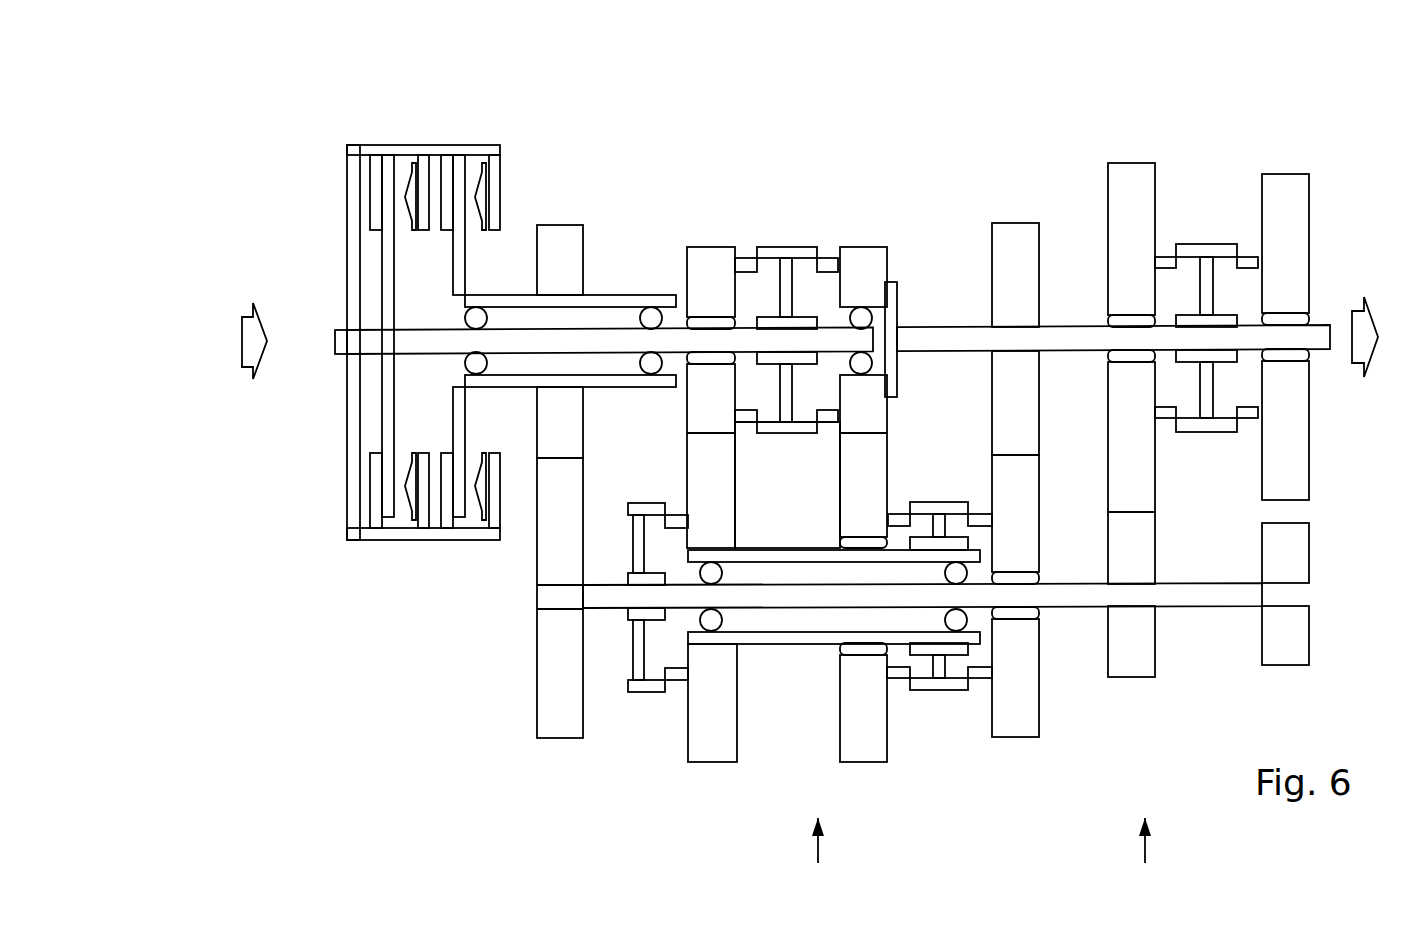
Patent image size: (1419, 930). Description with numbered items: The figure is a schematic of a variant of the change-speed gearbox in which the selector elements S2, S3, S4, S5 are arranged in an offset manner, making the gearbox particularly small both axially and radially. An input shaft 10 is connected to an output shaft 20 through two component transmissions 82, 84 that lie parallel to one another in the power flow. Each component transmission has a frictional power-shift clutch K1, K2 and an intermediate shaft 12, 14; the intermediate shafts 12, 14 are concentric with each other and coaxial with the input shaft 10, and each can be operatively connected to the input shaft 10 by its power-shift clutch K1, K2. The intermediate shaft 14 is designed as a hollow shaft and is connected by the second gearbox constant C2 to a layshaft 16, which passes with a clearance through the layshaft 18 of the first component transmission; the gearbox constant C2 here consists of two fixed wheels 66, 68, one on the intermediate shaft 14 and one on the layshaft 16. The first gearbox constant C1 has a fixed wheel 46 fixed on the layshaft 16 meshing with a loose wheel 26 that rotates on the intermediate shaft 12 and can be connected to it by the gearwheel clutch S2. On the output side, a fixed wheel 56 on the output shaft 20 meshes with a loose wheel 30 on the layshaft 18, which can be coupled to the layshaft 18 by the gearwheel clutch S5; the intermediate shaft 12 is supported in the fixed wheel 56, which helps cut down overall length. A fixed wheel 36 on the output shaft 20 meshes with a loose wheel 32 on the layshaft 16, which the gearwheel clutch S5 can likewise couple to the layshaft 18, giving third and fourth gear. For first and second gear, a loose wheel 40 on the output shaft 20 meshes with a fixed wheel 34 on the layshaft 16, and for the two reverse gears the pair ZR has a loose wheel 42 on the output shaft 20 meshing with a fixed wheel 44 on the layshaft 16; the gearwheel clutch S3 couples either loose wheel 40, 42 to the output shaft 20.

The input shaft 10 is at (345, 342).
The intermediate shaft 12 is at (393, 341).
The intermediate shaft 14 is at (487, 293).
The layshaft 16 is at (618, 598).
The layshaft 18 is at (712, 644).
The output shaft 20 is at (1306, 335).
The loose wheel 26 is at (712, 412).
The loose wheel 30 is at (862, 468).
The loose wheel 32 is at (1017, 490).
The fixed wheel 34 is at (1143, 547).
The fixed wheel 36 is at (1015, 312).
The loose wheel 40 is at (1130, 257).
The loose wheel 42 is at (1282, 208).
The fixed wheel 44 is at (1285, 557).
The fixed wheel 46 is at (713, 715).
The fixed wheel 56 is at (862, 420).
The fixed wheel 66 is at (570, 433).
The fixed wheel 68 is at (560, 715).
The component transmission 82 is at (816, 861).
The component transmission 84 is at (1146, 861).
The power-shift clutch K1 is at (393, 518).
The power-shift clutch K2 is at (465, 518).
The first gearbox constant C1 is at (741, 306).
The second gearbox constant C2 is at (554, 455).
The gearwheel clutch S2 is at (792, 247).
The gearwheel clutch S3 is at (1210, 243).
The selector element S4 is at (655, 692).
The gearwheel clutch S5 is at (933, 692).
The gearwheel pair ZR is at (1328, 363).